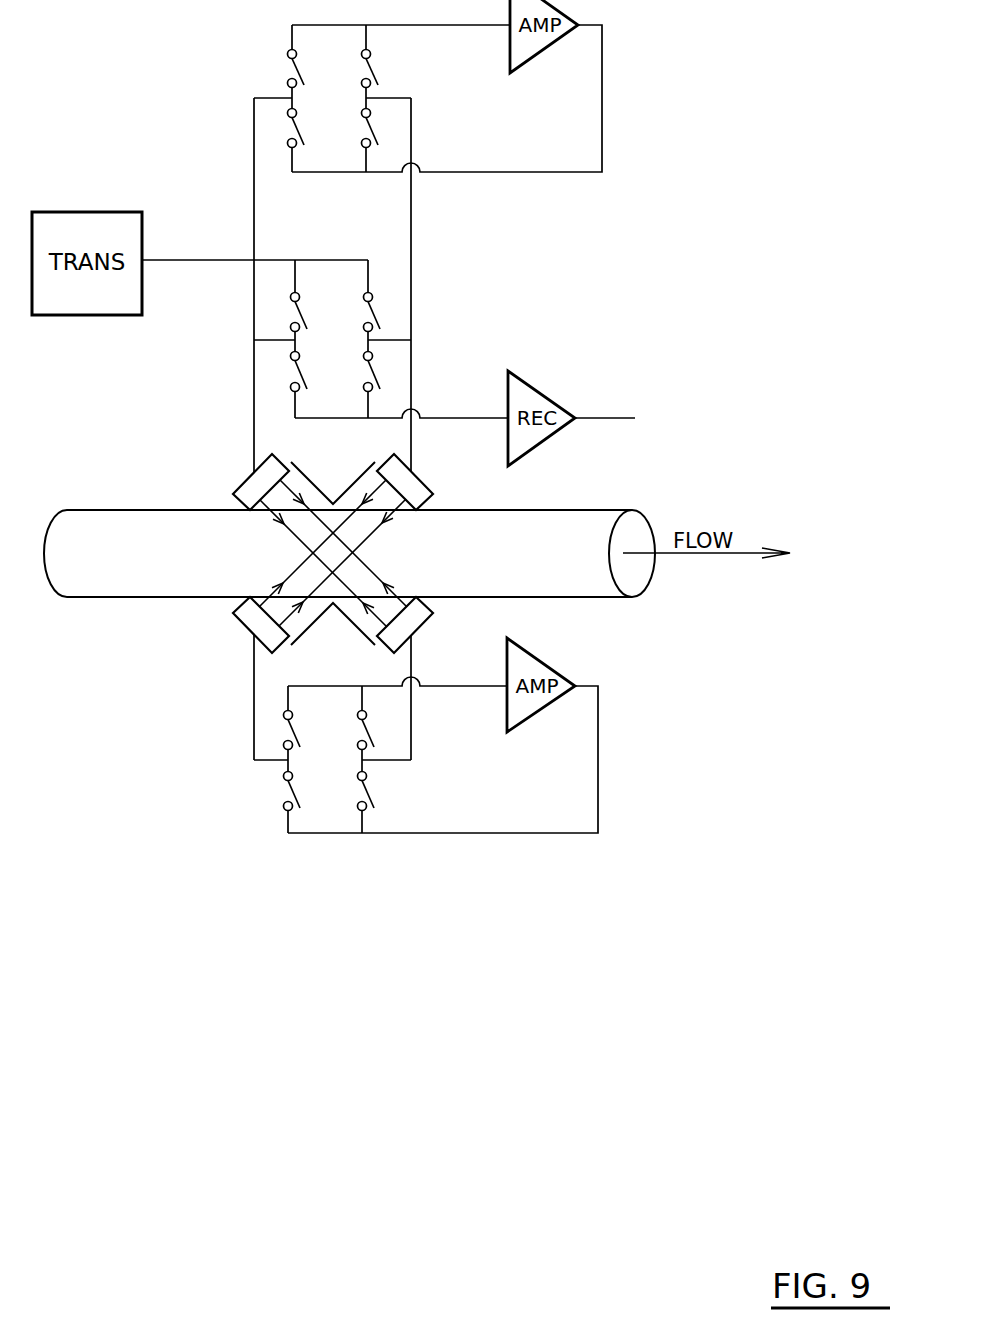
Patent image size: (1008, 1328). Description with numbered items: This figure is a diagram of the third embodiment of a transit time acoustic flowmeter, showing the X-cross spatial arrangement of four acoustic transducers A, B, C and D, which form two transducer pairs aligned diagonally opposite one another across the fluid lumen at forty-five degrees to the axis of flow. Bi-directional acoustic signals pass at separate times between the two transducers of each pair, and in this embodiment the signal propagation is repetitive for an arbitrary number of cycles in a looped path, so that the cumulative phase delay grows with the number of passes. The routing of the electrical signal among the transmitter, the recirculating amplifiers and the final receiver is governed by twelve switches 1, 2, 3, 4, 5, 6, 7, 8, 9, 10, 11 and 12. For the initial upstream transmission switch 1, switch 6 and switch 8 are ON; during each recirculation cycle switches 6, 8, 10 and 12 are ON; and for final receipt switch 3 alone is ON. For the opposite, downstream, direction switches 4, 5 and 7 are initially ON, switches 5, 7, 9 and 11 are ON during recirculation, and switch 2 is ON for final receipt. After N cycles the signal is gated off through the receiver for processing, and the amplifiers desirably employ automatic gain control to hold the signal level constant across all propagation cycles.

The switch 1 is at (382, 300).
The switch 2 is at (382, 379).
The switch 3 is at (309, 379).
The switch 4 is at (309, 300).
The switch 5 is at (376, 723).
The switch 6 is at (376, 796).
The switch 7 is at (301, 796).
The switch 8 is at (301, 723).
The switch 9 is at (379, 61).
The switch 10 is at (383, 135).
The switch 11 is at (308, 135).
The switch 12 is at (309, 61).
The acoustic transducer A is at (407, 482).
The acoustic transducer B is at (255, 482).
The acoustic transducer C is at (255, 627).
The acoustic transducer D is at (406, 627).